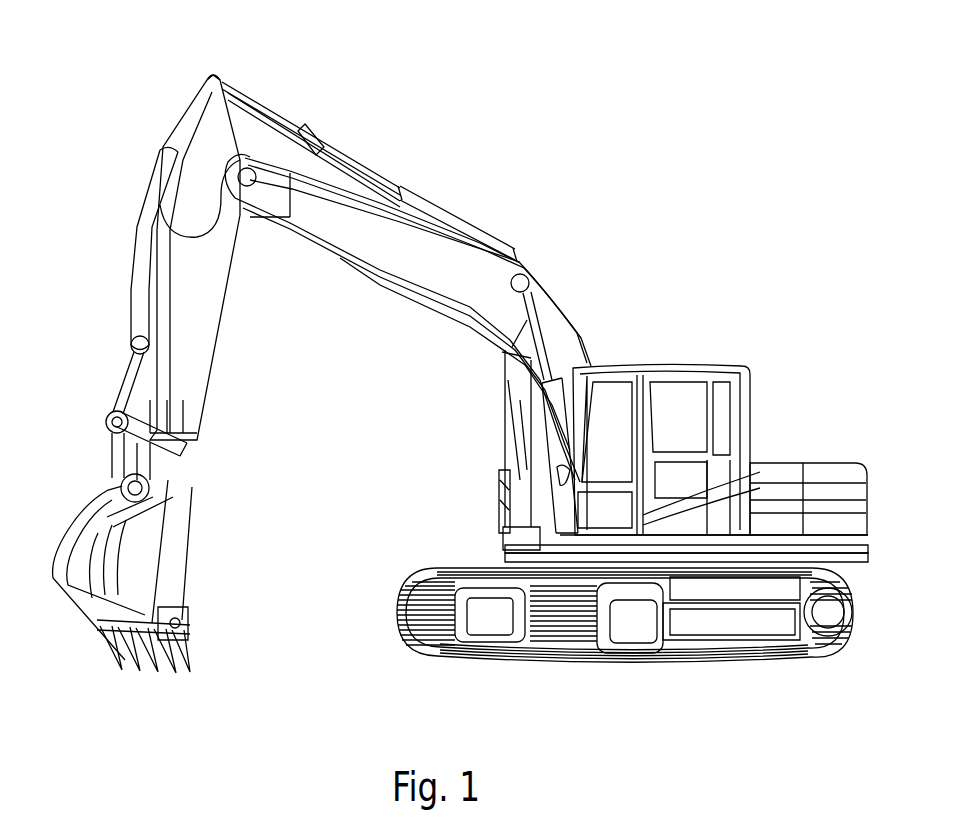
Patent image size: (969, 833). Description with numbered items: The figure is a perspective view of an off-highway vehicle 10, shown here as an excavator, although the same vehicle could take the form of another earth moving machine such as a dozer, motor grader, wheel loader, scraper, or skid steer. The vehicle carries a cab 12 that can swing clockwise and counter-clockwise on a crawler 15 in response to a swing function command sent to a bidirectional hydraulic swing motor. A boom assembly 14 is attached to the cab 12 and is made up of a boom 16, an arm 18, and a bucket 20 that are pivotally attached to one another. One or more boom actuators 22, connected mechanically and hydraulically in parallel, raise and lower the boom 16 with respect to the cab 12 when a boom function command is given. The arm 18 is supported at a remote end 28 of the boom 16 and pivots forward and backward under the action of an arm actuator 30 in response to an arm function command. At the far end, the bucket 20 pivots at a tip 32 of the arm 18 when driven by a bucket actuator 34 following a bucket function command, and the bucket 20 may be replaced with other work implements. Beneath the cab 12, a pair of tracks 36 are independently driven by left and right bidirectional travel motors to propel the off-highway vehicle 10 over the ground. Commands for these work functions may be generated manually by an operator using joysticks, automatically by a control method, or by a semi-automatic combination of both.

The off-highway vehicle 10 is at (773, 352).
The cab 12 is at (745, 440).
The boom assembly 14 is at (343, 275).
The crawler 15 is at (698, 625).
The boom 16 is at (393, 253).
The arm 18 is at (200, 350).
The bucket 20 is at (146, 550).
The boom actuators 22 is at (560, 430).
The remote end 28 is at (270, 84).
The arm actuator 30 is at (363, 174).
The tip 32 is at (213, 472).
The bucket actuator 34 is at (131, 305).
The tracks 36 is at (403, 630).